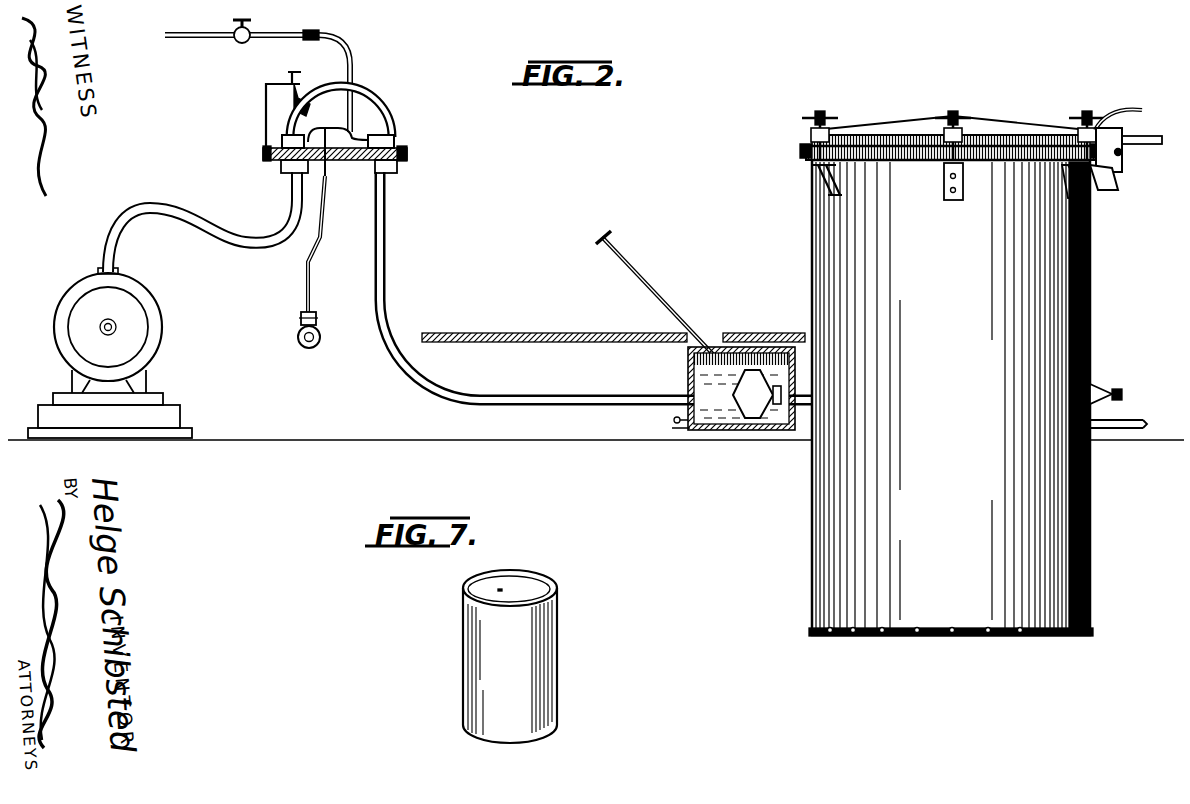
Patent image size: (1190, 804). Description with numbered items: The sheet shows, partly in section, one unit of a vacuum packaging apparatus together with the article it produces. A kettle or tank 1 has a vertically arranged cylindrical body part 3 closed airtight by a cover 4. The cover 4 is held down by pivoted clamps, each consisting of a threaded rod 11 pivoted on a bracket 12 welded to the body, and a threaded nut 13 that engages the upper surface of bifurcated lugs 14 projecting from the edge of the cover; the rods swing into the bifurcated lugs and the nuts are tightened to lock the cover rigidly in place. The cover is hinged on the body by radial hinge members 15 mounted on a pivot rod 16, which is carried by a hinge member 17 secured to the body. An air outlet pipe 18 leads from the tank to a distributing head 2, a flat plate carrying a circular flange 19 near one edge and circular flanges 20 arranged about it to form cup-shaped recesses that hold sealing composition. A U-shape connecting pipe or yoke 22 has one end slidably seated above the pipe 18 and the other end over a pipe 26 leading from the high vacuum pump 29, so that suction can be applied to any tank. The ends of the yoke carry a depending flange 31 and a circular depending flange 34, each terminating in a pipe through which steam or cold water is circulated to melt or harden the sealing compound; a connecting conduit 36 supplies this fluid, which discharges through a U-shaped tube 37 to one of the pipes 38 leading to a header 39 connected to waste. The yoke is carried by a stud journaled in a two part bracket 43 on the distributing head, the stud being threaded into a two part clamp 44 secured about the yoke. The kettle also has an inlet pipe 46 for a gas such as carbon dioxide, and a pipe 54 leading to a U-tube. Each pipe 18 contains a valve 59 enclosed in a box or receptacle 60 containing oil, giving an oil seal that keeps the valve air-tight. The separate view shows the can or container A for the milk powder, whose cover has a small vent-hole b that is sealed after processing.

In FIG. 2, the kettle or tank 1 is at (964, 360).
In FIG. 2, the distributing head 2 is at (346, 162).
In FIG. 2, the cylindrical body part 3 is at (1090, 290).
In FIG. 2, the cover 4 is at (884, 130).
In FIG. 2, the threaded rod 11 is at (1108, 158).
In FIG. 2, the bracket 12 is at (1068, 198).
In FIG. 2, the threaded nut 13 is at (1090, 118).
In FIG. 2, the bifurcated lugs 14 is at (951, 135).
In FIG. 2, the radial hinge members 15 is at (1122, 134).
In FIG. 2, the pivot rod 16 is at (1122, 155).
In FIG. 2, the hinge member 17 is at (1110, 186).
In FIG. 2, the air outlet pipe 18 is at (388, 256).
In FIG. 2, the circular flange 19 is at (262, 157).
In FIG. 2, the circular flanges 20 is at (408, 153).
In FIG. 2, the U-shape connecting pipe or yoke 22 is at (362, 94).
In FIG. 2, the pipe 26 is at (216, 226).
In FIG. 2, the high vacuum pump 29 is at (153, 317).
In FIG. 2, the depending flange 31 is at (282, 142).
In FIG. 2, the circular depending flange 34 is at (396, 145).
In FIG. 2, the connecting pipe or conduit 36 is at (264, 40).
In FIG. 2, the U-shaped tube 37 is at (318, 132).
In FIG. 2, the pipes 38 is at (318, 228).
In FIG. 2, the header 39 is at (298, 340).
In FIG. 2, the two part bracket 43 is at (266, 98).
In FIG. 2, the two part clamp 44 is at (308, 104).
In FIG. 2, the inlet pipe 46 is at (1116, 390).
In FIG. 2, the pipe 54 is at (1140, 425).
In FIG. 2, the valve 59 is at (753, 394).
In FIG. 2, the box or receptacle 60 is at (700, 430).
In FIG. 7, the can or container A is at (531, 645).
In FIG. 7, the vent-hole b is at (512, 584).